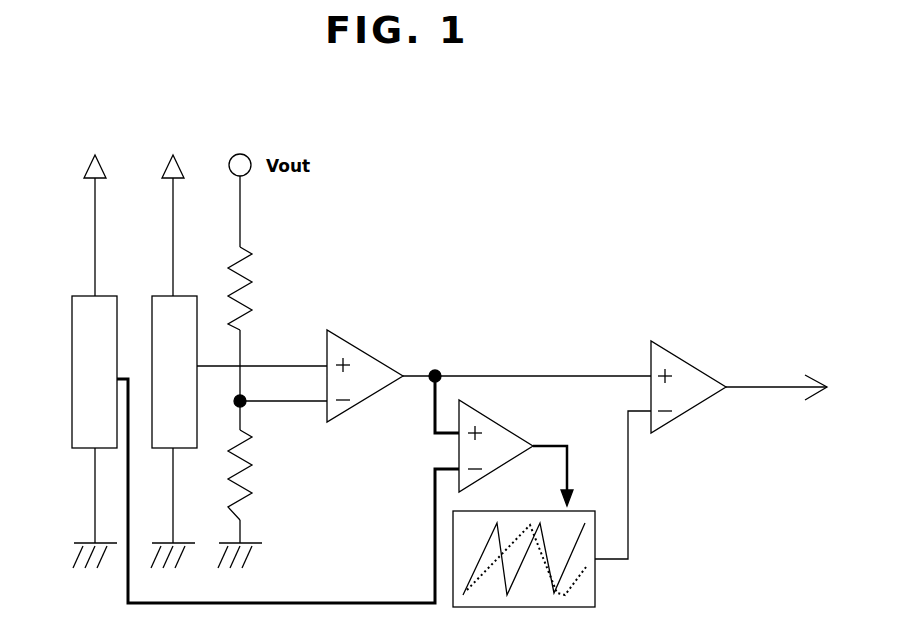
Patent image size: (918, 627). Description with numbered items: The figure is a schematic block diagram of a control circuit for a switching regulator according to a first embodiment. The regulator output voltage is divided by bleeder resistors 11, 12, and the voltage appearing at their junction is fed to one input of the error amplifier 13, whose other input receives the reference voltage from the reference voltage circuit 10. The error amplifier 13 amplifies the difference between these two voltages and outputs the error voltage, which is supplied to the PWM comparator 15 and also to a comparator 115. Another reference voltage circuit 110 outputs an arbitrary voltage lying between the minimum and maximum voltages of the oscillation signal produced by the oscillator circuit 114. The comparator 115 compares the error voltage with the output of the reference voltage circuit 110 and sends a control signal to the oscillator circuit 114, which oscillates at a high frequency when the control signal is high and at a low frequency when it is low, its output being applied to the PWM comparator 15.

The reference voltage circuit 110 is at (73, 285).
The reference voltage circuit 10 is at (153, 285).
The bleeder resistor 11 is at (250, 295).
The bleeder resistor 12 is at (250, 483).
The error amplifier 13 is at (360, 340).
The comparator 115 is at (500, 410).
The oscillator circuit 114 is at (583, 582).
The PWM comparator 15 is at (687, 352).